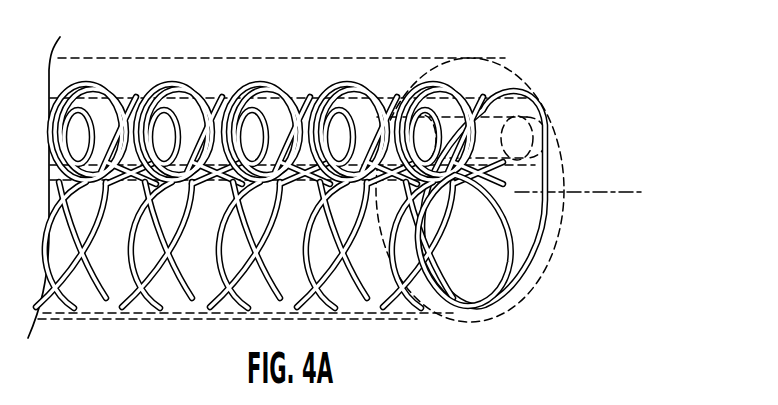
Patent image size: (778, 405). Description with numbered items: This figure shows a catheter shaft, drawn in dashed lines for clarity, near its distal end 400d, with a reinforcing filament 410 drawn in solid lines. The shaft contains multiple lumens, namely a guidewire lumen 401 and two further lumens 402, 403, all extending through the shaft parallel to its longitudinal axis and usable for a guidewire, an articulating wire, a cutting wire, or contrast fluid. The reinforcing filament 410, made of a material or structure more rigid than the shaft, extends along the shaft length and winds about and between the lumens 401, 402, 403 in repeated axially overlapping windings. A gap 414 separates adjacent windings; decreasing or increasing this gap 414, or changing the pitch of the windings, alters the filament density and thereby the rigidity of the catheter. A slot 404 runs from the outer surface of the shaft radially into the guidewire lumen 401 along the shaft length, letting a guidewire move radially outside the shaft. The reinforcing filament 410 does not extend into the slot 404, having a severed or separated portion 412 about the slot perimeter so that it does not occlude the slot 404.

The gap 414 is at (285, 76).
The reinforcing filament 410 is at (443, 189).
The lumen 402 is at (438, 122).
The lumen 403 is at (525, 140).
The distal end 400d is at (560, 210).
The guidewire lumen 401 is at (483, 238).
The severed or separated portion 412 is at (433, 298).
The slot 404 is at (456, 300).